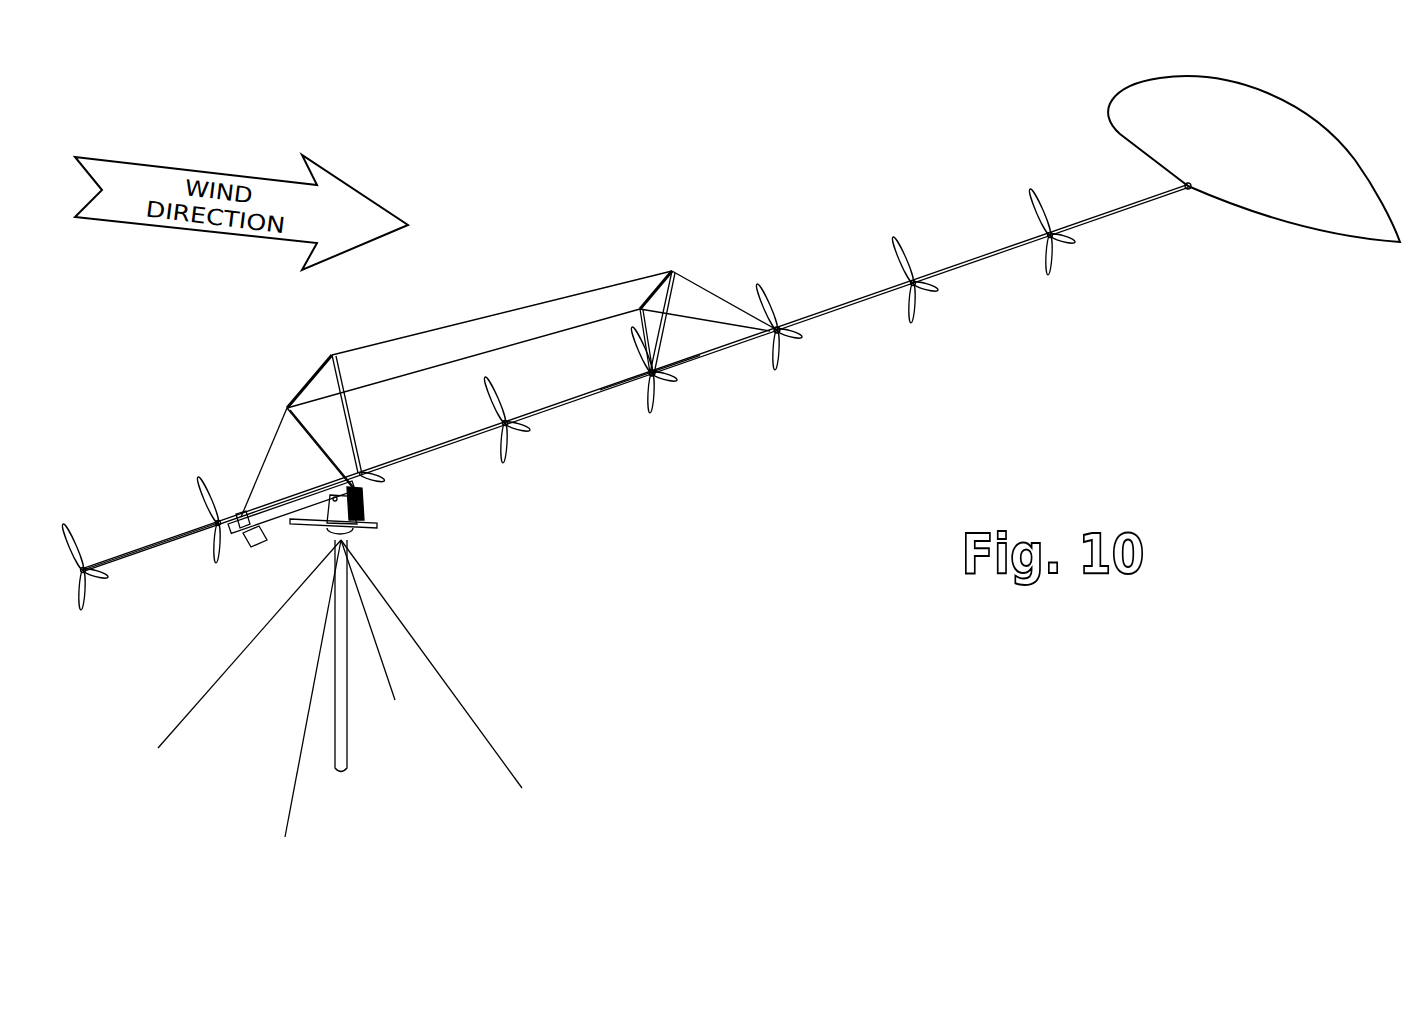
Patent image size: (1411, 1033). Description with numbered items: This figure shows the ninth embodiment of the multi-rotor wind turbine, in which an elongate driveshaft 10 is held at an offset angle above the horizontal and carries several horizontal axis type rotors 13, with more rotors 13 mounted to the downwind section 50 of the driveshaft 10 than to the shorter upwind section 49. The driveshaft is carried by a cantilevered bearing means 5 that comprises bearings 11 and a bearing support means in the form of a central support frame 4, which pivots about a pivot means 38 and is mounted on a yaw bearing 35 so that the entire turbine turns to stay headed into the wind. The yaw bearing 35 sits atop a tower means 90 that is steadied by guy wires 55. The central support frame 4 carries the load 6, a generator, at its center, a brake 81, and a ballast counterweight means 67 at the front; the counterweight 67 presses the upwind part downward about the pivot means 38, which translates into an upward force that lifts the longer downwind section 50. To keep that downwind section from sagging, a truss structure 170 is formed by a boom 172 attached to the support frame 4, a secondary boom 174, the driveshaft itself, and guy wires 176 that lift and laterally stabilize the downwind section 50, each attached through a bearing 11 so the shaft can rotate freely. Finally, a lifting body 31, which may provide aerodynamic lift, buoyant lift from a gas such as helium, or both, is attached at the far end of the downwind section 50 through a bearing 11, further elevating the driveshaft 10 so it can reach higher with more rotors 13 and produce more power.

The bearing support means (central support frame) 4 is at (305, 505).
The cantilevered bearing means 5 is at (497, 370).
The load 6 is at (225, 515).
The elongate driveshaft 10 is at (855, 345).
The bearing 11 is at (657, 374).
The horizontal axis type rotor 13 is at (1038, 192).
The lifting body 31 is at (1267, 213).
The yaw bearing 35 is at (353, 535).
The pivot means 38 is at (325, 488).
The upwind section of the driveshaft 49 is at (113, 565).
The downwind section of the driveshaft 50 is at (955, 272).
The guy wire 55 is at (229, 662).
The ballast counterweight means 67 is at (253, 548).
The brake 81 is at (243, 510).
The tower means 90 is at (347, 717).
The truss structure 170 is at (532, 348).
The boom 172 is at (350, 408).
The secondary boom 174 is at (662, 340).
The guy wire to lift downwind section 176 is at (555, 293).